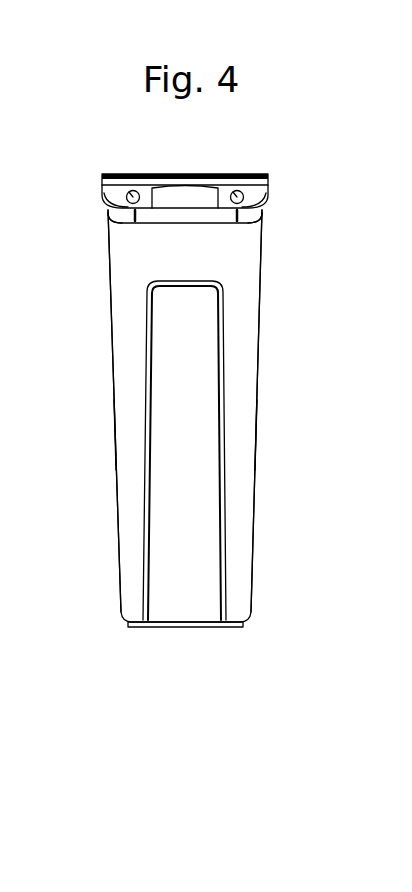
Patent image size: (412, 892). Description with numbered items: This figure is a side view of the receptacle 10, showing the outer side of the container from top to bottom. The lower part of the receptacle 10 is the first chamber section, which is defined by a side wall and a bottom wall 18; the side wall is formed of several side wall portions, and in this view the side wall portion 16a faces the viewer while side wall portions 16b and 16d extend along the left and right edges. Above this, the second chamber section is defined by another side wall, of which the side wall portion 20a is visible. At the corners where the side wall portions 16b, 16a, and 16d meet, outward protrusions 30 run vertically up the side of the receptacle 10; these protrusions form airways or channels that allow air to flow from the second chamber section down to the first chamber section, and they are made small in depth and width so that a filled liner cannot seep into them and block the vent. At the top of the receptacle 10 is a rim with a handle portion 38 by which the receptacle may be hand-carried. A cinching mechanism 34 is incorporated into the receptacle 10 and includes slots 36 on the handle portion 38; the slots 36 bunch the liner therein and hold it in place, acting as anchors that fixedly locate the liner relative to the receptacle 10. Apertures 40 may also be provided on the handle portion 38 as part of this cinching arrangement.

The receptacle 10 is at (336, 158).
The side wall portion 16a is at (208, 587).
The side wall portion 16b is at (118, 543).
The side wall portion 16d is at (253, 543).
The bottom wall 18 is at (177, 627).
The side wall portion 20a is at (165, 264).
The outward protrusions 30 is at (115, 437).
The cinching mechanism 34 is at (123, 239).
The slots 36 is at (108, 217).
The handle portion 38 is at (190, 186).
The apertures 40 is at (133, 190).